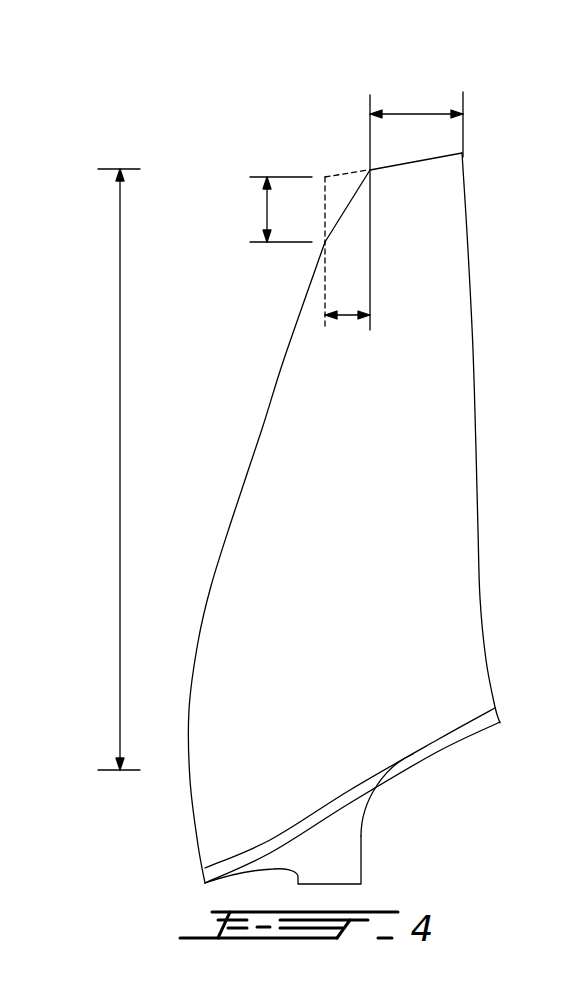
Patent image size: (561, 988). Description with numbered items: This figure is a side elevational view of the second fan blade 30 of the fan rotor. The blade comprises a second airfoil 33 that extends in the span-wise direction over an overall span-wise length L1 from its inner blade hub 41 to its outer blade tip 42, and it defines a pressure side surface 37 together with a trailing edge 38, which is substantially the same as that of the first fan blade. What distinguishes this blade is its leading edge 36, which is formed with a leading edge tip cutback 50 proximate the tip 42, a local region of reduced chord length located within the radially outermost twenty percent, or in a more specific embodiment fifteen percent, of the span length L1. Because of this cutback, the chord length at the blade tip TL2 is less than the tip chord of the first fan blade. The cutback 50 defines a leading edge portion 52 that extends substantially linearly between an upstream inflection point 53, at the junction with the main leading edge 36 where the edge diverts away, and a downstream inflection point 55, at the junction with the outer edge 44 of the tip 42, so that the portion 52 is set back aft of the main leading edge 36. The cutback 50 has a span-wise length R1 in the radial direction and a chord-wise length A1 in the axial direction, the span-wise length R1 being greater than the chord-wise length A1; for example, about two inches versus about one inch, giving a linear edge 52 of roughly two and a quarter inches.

The second fan blade 30 is at (220, 245).
The second airfoil 33 is at (267, 518).
The leading edge 36 is at (286, 357).
The pressure side surface 37 is at (352, 541).
The trailing edge 38 is at (480, 598).
The inner blade hub 41 is at (345, 826).
The outer blade tip 42 is at (442, 153).
The outer edge of the tip 44 is at (417, 157).
The leading edge tip cutback 50 is at (352, 183).
The leading edge portion 52 is at (344, 212).
The upstream inflection point 53 is at (325, 242).
The downstream inflection point 55 is at (368, 168).
The overall span-wise length L1 is at (120, 470).
The span-wise length of the cutback R1 is at (264, 209).
The chord length at the blade tip TL2 is at (405, 113).
The chord-wise length of the cutback A1 is at (347, 318).